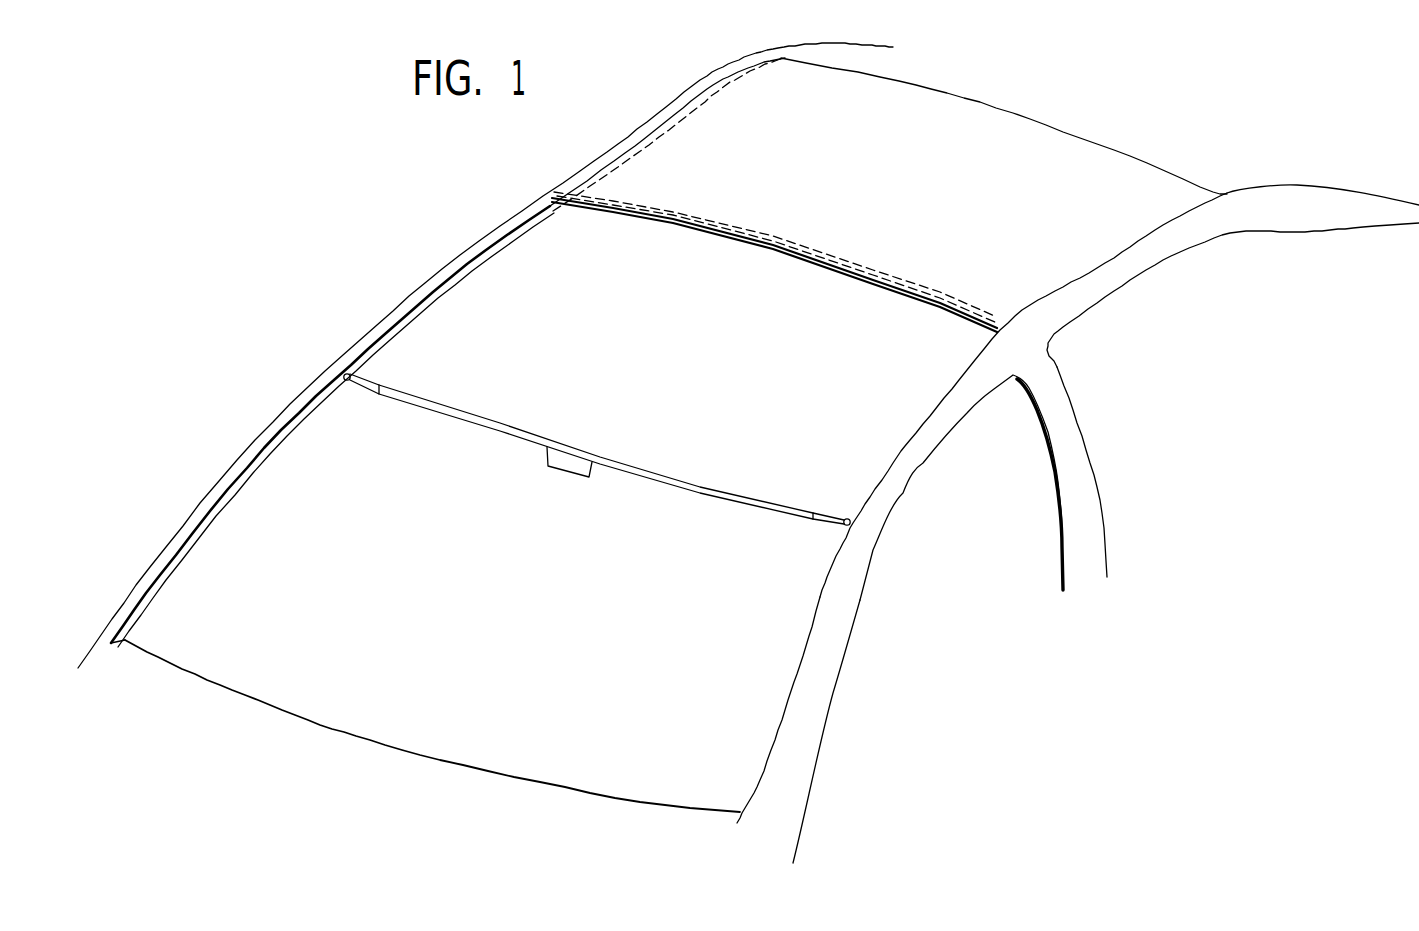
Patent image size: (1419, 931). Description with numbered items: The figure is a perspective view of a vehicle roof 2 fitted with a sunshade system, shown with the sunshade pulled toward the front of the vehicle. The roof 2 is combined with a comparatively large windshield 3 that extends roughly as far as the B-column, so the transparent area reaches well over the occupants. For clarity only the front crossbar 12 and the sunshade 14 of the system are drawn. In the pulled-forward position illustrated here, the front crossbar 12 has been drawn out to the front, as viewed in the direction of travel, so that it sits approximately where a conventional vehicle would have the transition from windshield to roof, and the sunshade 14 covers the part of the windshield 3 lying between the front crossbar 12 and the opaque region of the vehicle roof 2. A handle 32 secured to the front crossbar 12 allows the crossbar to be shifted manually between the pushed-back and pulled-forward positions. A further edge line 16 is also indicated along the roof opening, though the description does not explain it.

The vehicle roof 2 is at (1066, 262).
The windshield 3 is at (763, 687).
The front crossbar 12 is at (737, 500).
The sunshade 14 is at (863, 447).
The roof opening edge 16 is at (838, 256).
The handle 32 is at (567, 465).